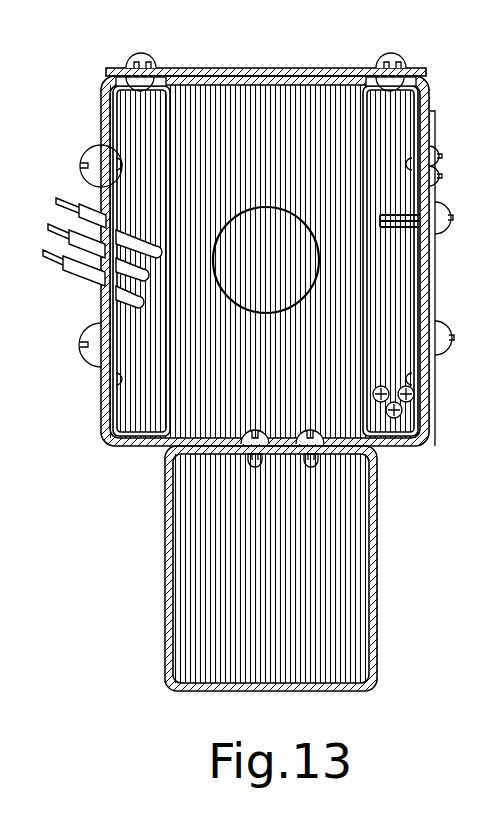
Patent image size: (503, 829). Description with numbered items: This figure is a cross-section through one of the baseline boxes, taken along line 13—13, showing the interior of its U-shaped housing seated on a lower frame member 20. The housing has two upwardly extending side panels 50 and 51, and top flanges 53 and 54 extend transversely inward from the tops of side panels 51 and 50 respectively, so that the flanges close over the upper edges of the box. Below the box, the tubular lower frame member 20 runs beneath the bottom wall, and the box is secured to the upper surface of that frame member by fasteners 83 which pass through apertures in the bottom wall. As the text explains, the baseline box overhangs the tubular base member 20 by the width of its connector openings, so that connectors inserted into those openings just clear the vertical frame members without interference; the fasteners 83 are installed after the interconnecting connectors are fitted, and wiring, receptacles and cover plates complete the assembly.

The side panel 50 is at (97, 94).
The side panel 51 is at (428, 93).
The top flange 53 is at (138, 72).
The top flange 54 is at (378, 70).
The screw 13 is at (252, 424).
The fastener 83 is at (305, 424).
The lower frame member 20 is at (158, 561).